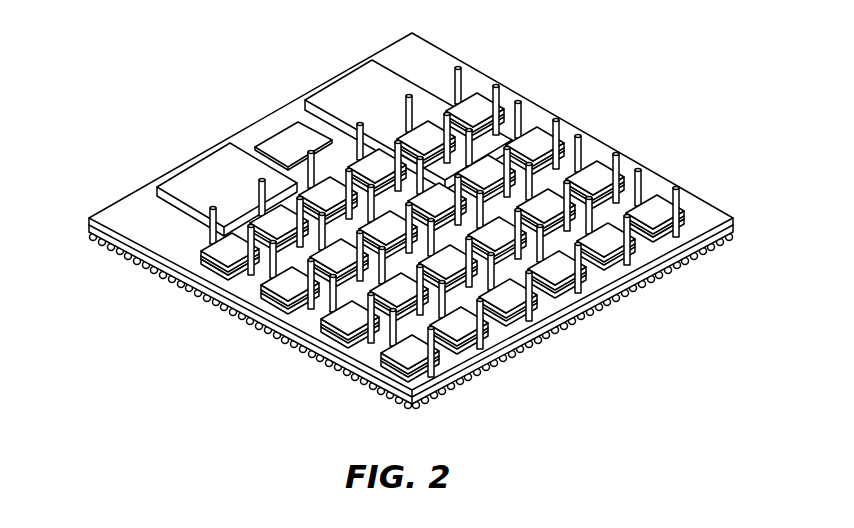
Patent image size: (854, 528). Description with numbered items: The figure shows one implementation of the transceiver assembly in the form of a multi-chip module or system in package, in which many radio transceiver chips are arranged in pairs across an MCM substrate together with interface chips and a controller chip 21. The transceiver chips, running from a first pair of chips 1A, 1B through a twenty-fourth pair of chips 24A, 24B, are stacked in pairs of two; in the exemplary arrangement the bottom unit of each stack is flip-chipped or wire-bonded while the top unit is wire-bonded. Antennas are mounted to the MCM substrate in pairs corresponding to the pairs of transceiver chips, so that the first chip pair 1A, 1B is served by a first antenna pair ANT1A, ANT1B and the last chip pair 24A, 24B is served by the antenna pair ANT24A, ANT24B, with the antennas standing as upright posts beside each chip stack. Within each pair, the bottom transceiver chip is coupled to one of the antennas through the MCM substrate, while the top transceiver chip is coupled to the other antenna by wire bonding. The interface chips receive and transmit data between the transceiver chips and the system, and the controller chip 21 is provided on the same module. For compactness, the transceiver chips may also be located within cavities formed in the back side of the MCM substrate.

The controller chip 21 is at (290, 132).
The antenna ANT1A is at (129, 252).
The radio transceiver chip 1A is at (188, 282).
The radio transceiver chip 1B is at (212, 302).
The antenna ANT1B is at (220, 300).
The antenna ANT24A is at (680, 162).
The radio transceiver chip 24A is at (682, 189).
The radio transceiver chip 24B is at (702, 205).
The antenna ANT24B is at (713, 245).